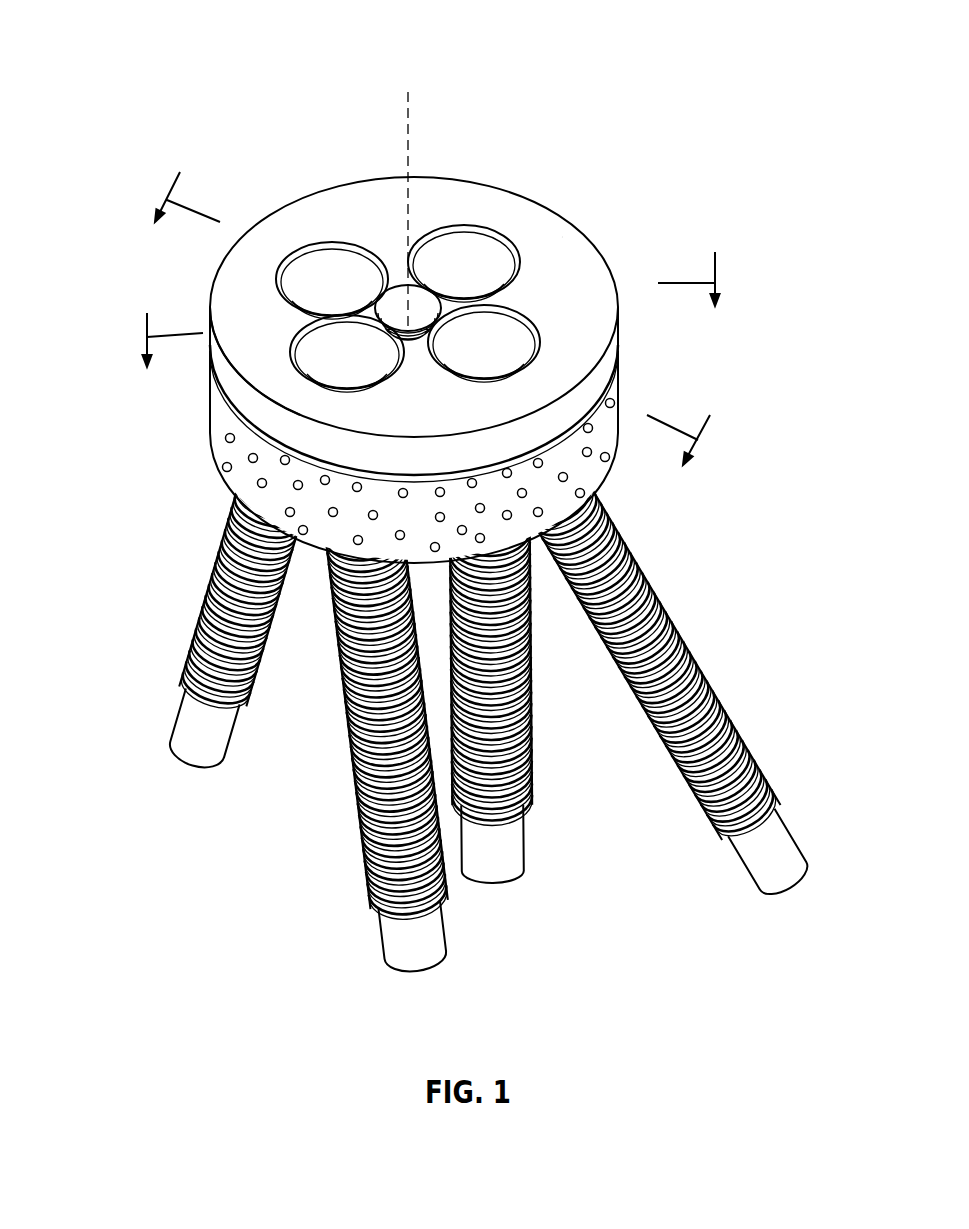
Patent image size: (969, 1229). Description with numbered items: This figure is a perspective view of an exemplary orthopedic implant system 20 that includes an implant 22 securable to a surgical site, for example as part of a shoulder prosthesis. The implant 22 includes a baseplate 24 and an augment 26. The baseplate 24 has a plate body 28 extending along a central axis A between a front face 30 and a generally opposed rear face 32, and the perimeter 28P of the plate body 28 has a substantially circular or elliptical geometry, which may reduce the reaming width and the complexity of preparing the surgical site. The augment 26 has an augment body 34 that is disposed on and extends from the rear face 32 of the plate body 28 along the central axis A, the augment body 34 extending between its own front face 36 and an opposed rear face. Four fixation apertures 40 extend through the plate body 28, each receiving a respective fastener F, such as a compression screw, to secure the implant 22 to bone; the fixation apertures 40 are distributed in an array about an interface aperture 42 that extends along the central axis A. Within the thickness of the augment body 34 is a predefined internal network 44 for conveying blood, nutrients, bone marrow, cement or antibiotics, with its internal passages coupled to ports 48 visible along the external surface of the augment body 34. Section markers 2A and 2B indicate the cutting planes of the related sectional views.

The orthopedic implant system 20 is at (131, 53).
The implant 22 is at (262, 163).
The baseplate 24 is at (497, 186).
The augment 26 is at (620, 386).
The plate body 28 is at (540, 203).
The perimeter of the plate body 28P is at (608, 350).
The front face 30 is at (562, 237).
The rear face 32 is at (212, 395).
The augment body 34 is at (215, 430).
The front face 36 is at (208, 367).
The fixation apertures 40 is at (335, 265).
The interface aperture 42 is at (400, 286).
The internal network 44 is at (618, 487).
The ports 48 is at (253, 458).
The fasteners F is at (183, 722).
The central axis A is at (412, 104).
The section line 2A is at (717, 262).
The section line 2B is at (176, 184).